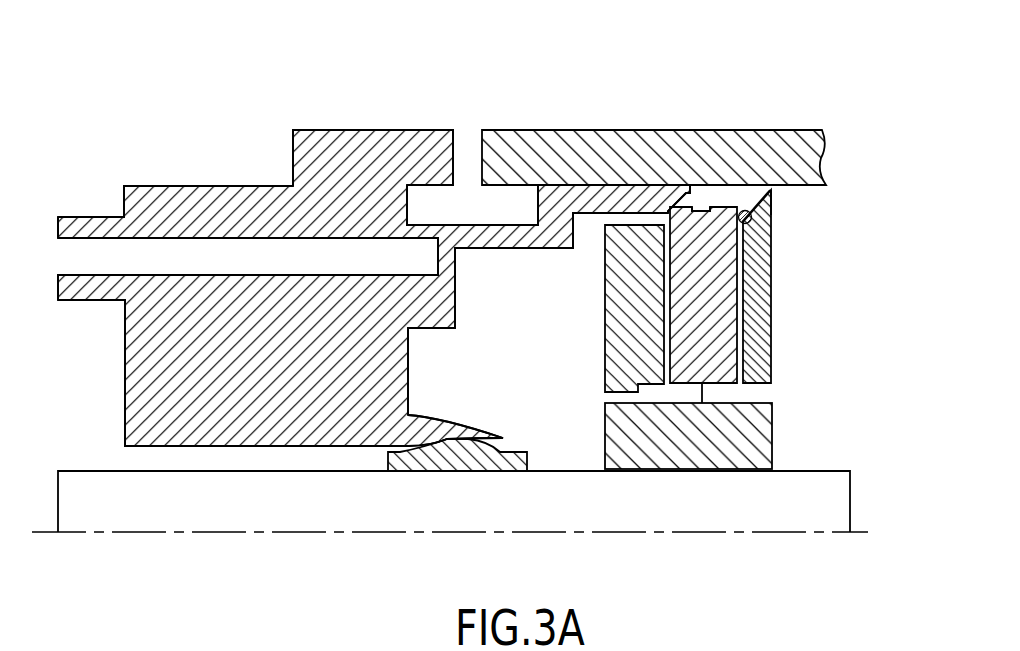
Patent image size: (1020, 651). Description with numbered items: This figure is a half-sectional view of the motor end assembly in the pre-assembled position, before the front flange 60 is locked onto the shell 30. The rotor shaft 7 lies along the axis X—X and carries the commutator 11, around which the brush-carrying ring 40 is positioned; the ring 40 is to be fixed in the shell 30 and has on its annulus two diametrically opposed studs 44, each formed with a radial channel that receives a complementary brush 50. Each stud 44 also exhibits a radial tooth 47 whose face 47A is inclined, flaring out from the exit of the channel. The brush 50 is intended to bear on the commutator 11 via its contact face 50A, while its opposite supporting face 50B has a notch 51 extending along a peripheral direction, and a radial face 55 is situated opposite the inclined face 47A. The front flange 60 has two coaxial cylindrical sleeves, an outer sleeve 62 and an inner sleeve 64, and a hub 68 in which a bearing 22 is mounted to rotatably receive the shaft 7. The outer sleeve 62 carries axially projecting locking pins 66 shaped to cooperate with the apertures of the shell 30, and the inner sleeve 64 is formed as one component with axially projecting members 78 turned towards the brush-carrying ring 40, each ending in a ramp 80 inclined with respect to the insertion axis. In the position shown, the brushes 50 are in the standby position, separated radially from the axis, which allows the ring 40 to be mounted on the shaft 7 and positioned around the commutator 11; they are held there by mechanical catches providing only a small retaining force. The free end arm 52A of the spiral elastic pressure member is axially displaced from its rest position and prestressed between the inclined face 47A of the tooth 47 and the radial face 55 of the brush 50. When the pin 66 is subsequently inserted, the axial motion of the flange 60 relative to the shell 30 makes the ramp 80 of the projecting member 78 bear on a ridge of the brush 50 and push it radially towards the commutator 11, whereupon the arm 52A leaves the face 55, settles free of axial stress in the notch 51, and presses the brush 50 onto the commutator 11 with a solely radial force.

The shaft 7 is at (798, 517).
The commutator 11 is at (762, 442).
The bearing 22 is at (512, 452).
The shell 30 is at (655, 112).
The brush-carrying ring 40 is at (716, 289).
The stud 44 is at (618, 338).
The radial tooth 47 is at (773, 196).
The inclined face 47A is at (746, 208).
The brush 50 is at (703, 353).
The contact face 50A is at (704, 404).
The supporting face 50B is at (733, 207).
The notch 51 is at (697, 212).
The free end arm 52A is at (752, 218).
The radial face 55 is at (772, 293).
The front flange 60 is at (374, 231).
The outer sleeve 62 is at (184, 200).
The inner sleeve 64 is at (518, 248).
The locking pin 66 is at (335, 137).
The hub 68 is at (442, 423).
The projecting member 78 is at (607, 190).
The ramp 80 is at (694, 195).